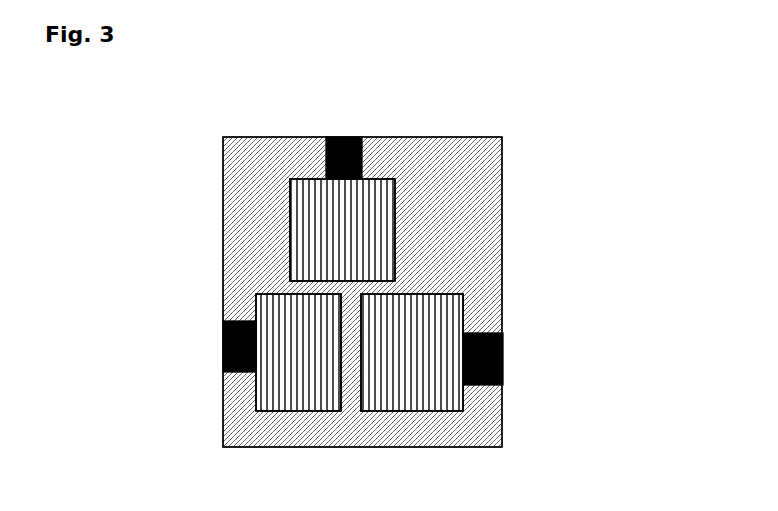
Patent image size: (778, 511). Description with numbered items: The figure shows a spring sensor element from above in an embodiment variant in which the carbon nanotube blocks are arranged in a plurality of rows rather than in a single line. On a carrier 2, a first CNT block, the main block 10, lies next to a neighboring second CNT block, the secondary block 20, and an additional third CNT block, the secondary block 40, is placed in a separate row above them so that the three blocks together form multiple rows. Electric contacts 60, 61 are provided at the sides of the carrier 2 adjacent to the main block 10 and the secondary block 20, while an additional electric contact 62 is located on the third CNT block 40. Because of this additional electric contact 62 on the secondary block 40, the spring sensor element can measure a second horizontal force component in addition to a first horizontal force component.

The carrier 2 is at (460, 196).
The main block 10 is at (287, 358).
The secondary block 20 is at (395, 392).
The secondary block 40 is at (362, 247).
The electric contact 60 is at (220, 343).
The electric contact 61 is at (503, 363).
The electric contact 62 is at (348, 138).